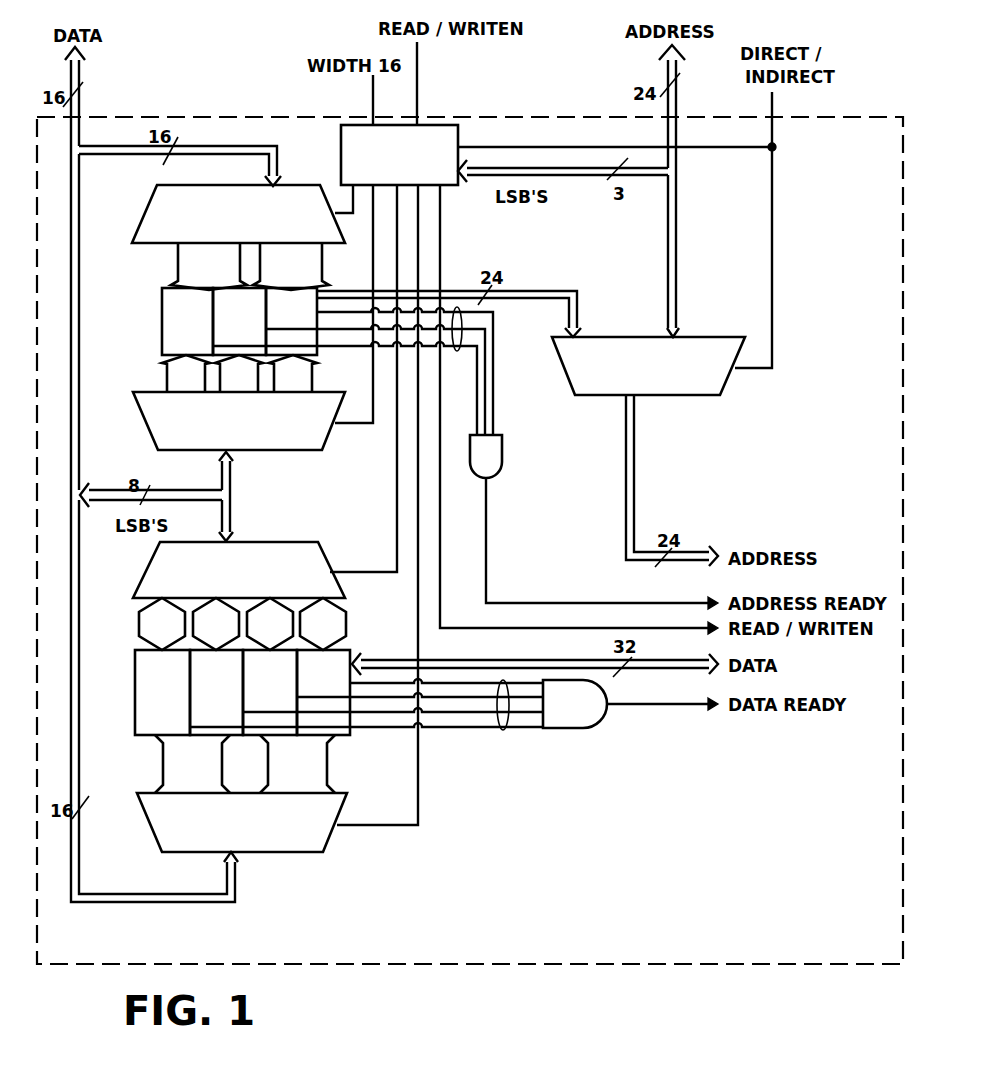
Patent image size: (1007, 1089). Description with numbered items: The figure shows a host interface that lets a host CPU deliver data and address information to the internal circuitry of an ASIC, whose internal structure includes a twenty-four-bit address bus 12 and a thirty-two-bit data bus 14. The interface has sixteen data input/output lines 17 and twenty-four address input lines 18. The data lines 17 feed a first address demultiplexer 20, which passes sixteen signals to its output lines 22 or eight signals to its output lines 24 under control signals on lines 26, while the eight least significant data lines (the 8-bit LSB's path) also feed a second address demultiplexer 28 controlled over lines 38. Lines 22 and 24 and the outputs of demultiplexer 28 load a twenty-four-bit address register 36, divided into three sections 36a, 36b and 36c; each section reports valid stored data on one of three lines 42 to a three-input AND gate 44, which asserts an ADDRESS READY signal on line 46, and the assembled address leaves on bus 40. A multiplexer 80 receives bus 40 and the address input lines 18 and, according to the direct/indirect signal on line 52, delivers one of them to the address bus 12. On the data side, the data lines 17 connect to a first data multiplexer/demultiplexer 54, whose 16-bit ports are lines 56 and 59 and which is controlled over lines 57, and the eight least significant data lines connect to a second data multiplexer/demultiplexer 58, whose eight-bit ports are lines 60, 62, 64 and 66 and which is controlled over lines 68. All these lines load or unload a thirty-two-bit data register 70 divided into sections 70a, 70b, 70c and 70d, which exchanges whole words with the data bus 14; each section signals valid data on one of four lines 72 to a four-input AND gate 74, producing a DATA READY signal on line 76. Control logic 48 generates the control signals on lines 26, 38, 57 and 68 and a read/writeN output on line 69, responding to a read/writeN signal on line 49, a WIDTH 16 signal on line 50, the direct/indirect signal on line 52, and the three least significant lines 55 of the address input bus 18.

The least significant bits bus 8 is at (156, 496).
The address bus 12 is at (713, 553).
The data bus 14 is at (690, 668).
The 16-bit data bus 16 is at (173, 474).
The data input/output lines 17 is at (78, 73).
The address input lines 18 is at (667, 58).
The address demultiplexer 20 is at (153, 200).
The output lines 22 is at (209, 266).
The output lines 24 is at (245, 317).
The lines 26 is at (353, 200).
The second address demultiplexer 28 is at (280, 450).
The address register 36 is at (158, 338).
The section 36a is at (187, 321).
The section 36b is at (239, 321).
The section 36c is at (291, 321).
The lines 38 is at (345, 291).
The bus 40 is at (535, 292).
The lines 42 is at (458, 351).
The AND gate 44 is at (502, 462).
The line 46 is at (487, 514).
The control logic 48 is at (440, 125).
The line 49 is at (417, 75).
The line 50 is at (372, 92).
The line 52 is at (772, 100).
The data multiplexer/demultiplexer 54 is at (328, 838).
The three least significant lines 55 is at (580, 177).
The lines 56 is at (192, 764).
The lines 57 is at (419, 827).
The second data multiplexer/demultiplexer 58 is at (267, 542).
The lines 59 is at (297, 764).
The lines 60 is at (162, 624).
The lines 62 is at (216, 624).
The lines 64 is at (270, 624).
The lines 66 is at (323, 624).
The lines 68 is at (397, 523).
The line 69 is at (442, 549).
The data register 70 is at (134, 707).
The section 70a is at (162, 692).
The section 70b is at (216, 692).
The section 70c is at (270, 692).
The section 70d is at (323, 692).
The lines 72 is at (503, 730).
The AND gate 74 is at (557, 728).
The line 76 is at (716, 708).
The multiplexer 80 is at (725, 382).